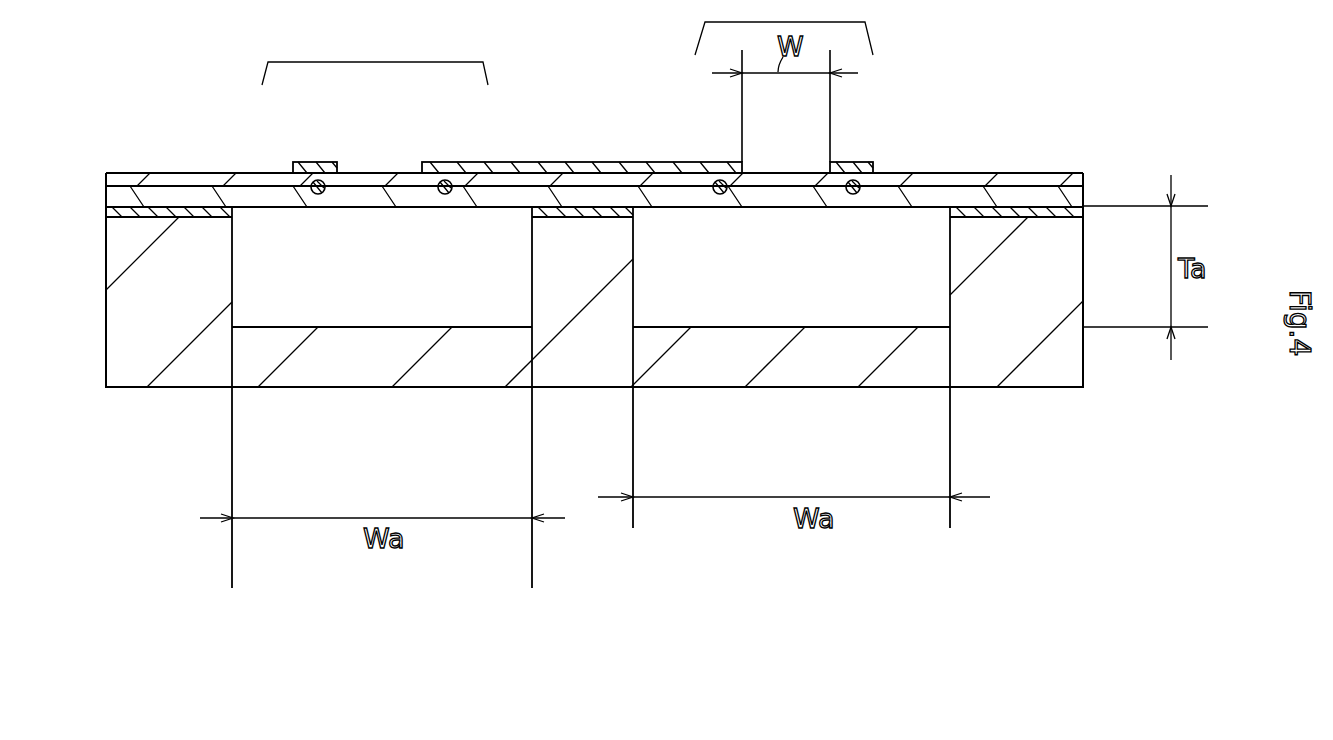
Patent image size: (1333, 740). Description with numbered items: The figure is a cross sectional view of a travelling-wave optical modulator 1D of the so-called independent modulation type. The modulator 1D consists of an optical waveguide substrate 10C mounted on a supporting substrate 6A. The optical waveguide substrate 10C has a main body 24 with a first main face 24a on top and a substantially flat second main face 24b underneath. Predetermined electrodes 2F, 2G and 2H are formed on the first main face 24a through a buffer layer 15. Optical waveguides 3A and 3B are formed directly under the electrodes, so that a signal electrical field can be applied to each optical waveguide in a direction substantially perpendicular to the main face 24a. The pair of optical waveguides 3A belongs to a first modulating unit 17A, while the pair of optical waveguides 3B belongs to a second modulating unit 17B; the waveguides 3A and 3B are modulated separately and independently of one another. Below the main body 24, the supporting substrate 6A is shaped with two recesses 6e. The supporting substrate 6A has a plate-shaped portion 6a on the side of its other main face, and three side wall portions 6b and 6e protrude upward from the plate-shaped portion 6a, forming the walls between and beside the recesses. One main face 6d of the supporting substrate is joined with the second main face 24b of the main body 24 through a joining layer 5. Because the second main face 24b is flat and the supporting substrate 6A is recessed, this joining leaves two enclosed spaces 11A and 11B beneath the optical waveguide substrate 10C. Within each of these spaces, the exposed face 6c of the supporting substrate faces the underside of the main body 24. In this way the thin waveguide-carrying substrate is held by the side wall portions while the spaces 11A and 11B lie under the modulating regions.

The travelling-wave optical modulator 1D is at (1057, 153).
The electrode 2F is at (333, 161).
The electrode 2G is at (550, 172).
The electrode 2H is at (847, 162).
The optical waveguide 3A is at (318, 181).
The optical waveguide 3B is at (718, 180).
The joining layer 5 is at (233, 210).
The supporting substrate 6A is at (1095, 249).
The plate-shaped portion 6a is at (938, 373).
The side wall portion 6b is at (1068, 283).
The exposed face 6c is at (452, 318).
The main face of supporting substrate 6d is at (175, 216).
The recess 6e is at (633, 281).
The optical waveguide substrate 10C is at (985, 158).
The space 11A is at (402, 284).
The space 11B is at (804, 284).
The buffer layer 15 is at (385, 180).
The first modulating unit 17A is at (375, 57).
The second modulating unit 17B is at (784, 81).
The main body 24 is at (1092, 181).
The first main face 24a is at (625, 177).
The second main face 24b is at (833, 206).